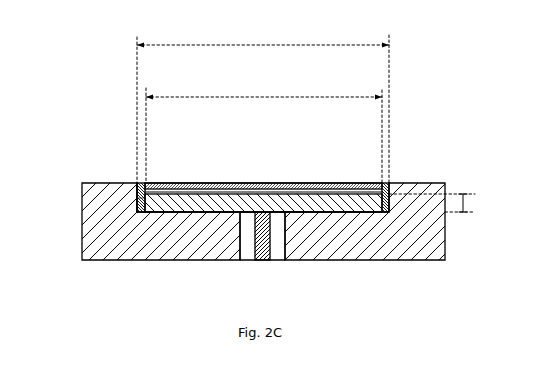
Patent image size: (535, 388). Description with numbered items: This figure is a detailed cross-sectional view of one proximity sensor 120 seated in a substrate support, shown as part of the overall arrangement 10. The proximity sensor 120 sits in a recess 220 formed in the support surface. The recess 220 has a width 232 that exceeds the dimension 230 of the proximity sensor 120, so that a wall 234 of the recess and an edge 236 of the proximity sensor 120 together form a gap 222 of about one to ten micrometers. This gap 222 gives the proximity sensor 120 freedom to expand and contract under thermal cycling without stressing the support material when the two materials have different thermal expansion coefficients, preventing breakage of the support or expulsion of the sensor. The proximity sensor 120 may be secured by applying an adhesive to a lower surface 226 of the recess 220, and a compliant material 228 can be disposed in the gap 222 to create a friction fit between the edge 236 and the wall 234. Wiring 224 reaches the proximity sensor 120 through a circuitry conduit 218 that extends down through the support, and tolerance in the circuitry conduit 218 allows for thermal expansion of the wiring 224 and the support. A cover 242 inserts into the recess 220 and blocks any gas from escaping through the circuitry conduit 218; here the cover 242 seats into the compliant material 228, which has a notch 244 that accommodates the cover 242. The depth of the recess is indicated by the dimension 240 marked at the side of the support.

The electronic device 10 is at (490, 227).
The proximity sensor 120 is at (215, 182).
The circuitry conduit 218 is at (246, 250).
The recess 220 is at (270, 182).
The gap 222 is at (138, 184).
The wiring 224 is at (266, 250).
The lower surface 226 is at (160, 212).
The compliant material 228 is at (136, 203).
The dimension of the proximity sensor 230 is at (258, 97).
The width of the recess 232 is at (258, 45).
The wall of the recess 234 is at (136, 193).
The edge of the proximity sensor 236 is at (392, 194).
The cavity depth 240 is at (463, 193).
The cover 242 is at (300, 190).
The notch 244 is at (141, 184).